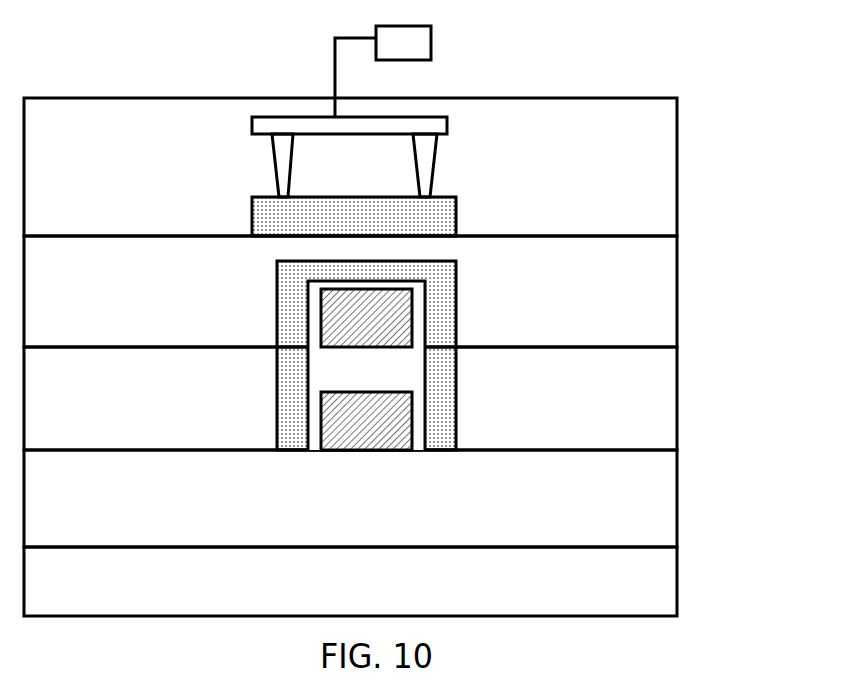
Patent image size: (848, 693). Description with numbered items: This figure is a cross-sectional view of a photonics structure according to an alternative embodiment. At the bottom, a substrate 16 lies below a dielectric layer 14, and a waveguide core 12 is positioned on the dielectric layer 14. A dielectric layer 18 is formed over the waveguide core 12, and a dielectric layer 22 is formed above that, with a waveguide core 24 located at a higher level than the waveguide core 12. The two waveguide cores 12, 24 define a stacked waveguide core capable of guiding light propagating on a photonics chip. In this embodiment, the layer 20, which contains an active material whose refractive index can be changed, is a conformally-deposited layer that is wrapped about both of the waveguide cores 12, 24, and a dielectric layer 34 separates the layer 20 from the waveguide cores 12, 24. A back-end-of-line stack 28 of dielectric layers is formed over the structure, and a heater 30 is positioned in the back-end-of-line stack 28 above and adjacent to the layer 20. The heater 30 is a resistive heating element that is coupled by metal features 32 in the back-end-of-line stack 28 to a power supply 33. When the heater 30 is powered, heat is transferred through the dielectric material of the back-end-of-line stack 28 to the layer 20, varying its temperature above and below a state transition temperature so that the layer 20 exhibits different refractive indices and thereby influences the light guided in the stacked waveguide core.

The waveguide core 12 is at (353, 408).
The dielectric layer 14 is at (637, 509).
The substrate 16 is at (637, 580).
The dielectric layer 18 is at (636, 368).
The layer 20 is at (442, 312).
The dielectric layer 22 is at (636, 267).
The waveguide core 24 is at (352, 307).
The back-end-of-line stack 28 is at (653, 174).
The heater 30 is at (427, 220).
The metal features 32 is at (425, 165).
The power supply 33 is at (407, 45).
The dielectric layer 34 is at (412, 372).